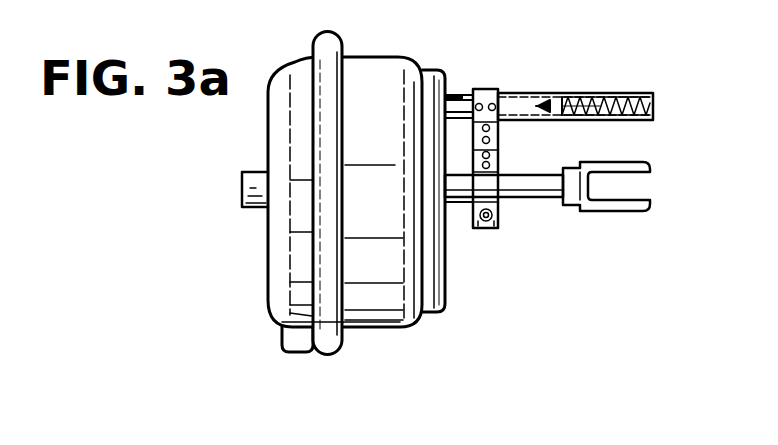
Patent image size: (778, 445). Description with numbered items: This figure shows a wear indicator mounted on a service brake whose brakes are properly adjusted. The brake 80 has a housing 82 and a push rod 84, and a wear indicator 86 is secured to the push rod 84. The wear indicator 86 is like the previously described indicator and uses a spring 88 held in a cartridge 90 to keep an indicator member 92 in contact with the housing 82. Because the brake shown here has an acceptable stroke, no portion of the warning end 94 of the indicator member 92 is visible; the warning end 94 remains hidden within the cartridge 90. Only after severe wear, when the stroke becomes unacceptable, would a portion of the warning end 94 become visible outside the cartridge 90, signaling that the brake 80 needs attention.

The brake 80 is at (410, 280).
The housing 82 is at (428, 80).
The push rod 84 is at (553, 198).
The wear indicator 86 is at (500, 152).
The spring 88 is at (653, 103).
The cartridge 90 is at (580, 95).
The indicator member 92 is at (550, 95).
The warning end 94 is at (598, 95).